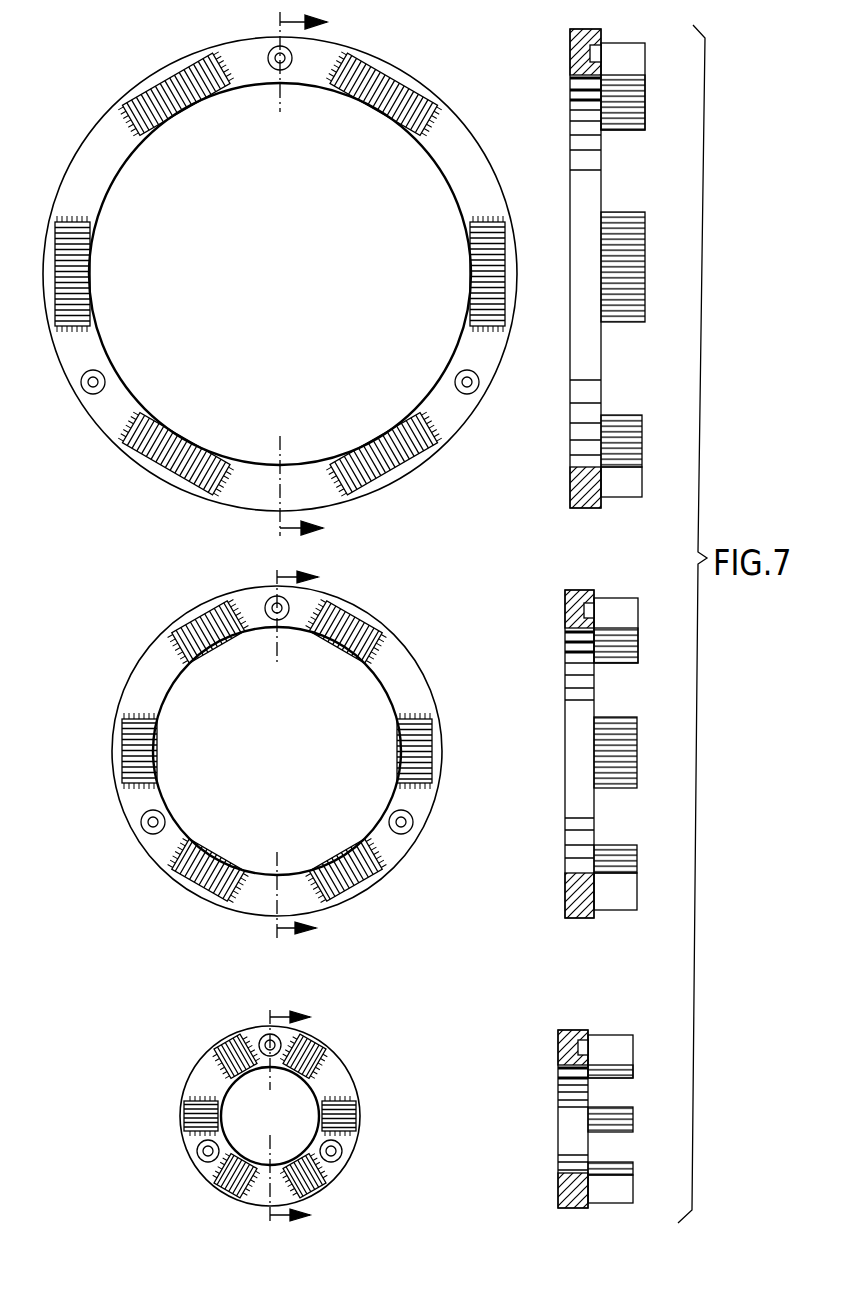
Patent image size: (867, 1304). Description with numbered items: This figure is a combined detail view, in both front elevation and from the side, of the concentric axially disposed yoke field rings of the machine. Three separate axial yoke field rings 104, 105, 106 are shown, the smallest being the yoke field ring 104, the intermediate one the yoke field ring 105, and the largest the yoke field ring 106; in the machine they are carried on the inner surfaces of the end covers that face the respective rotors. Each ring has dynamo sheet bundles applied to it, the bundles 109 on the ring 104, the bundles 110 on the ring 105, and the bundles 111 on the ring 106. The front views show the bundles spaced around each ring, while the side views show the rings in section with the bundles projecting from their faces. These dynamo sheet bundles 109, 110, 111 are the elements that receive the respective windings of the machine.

The axial yoke field ring 104 is at (365, 1063).
The axial yoke field ring 105 is at (430, 681).
The axial yoke field ring 106 is at (470, 452).
The dynamo sheet bundle 109 is at (345, 1020).
The dynamo sheet bundle 110 is at (392, 612).
The dynamo sheet bundle 111 is at (424, 503).